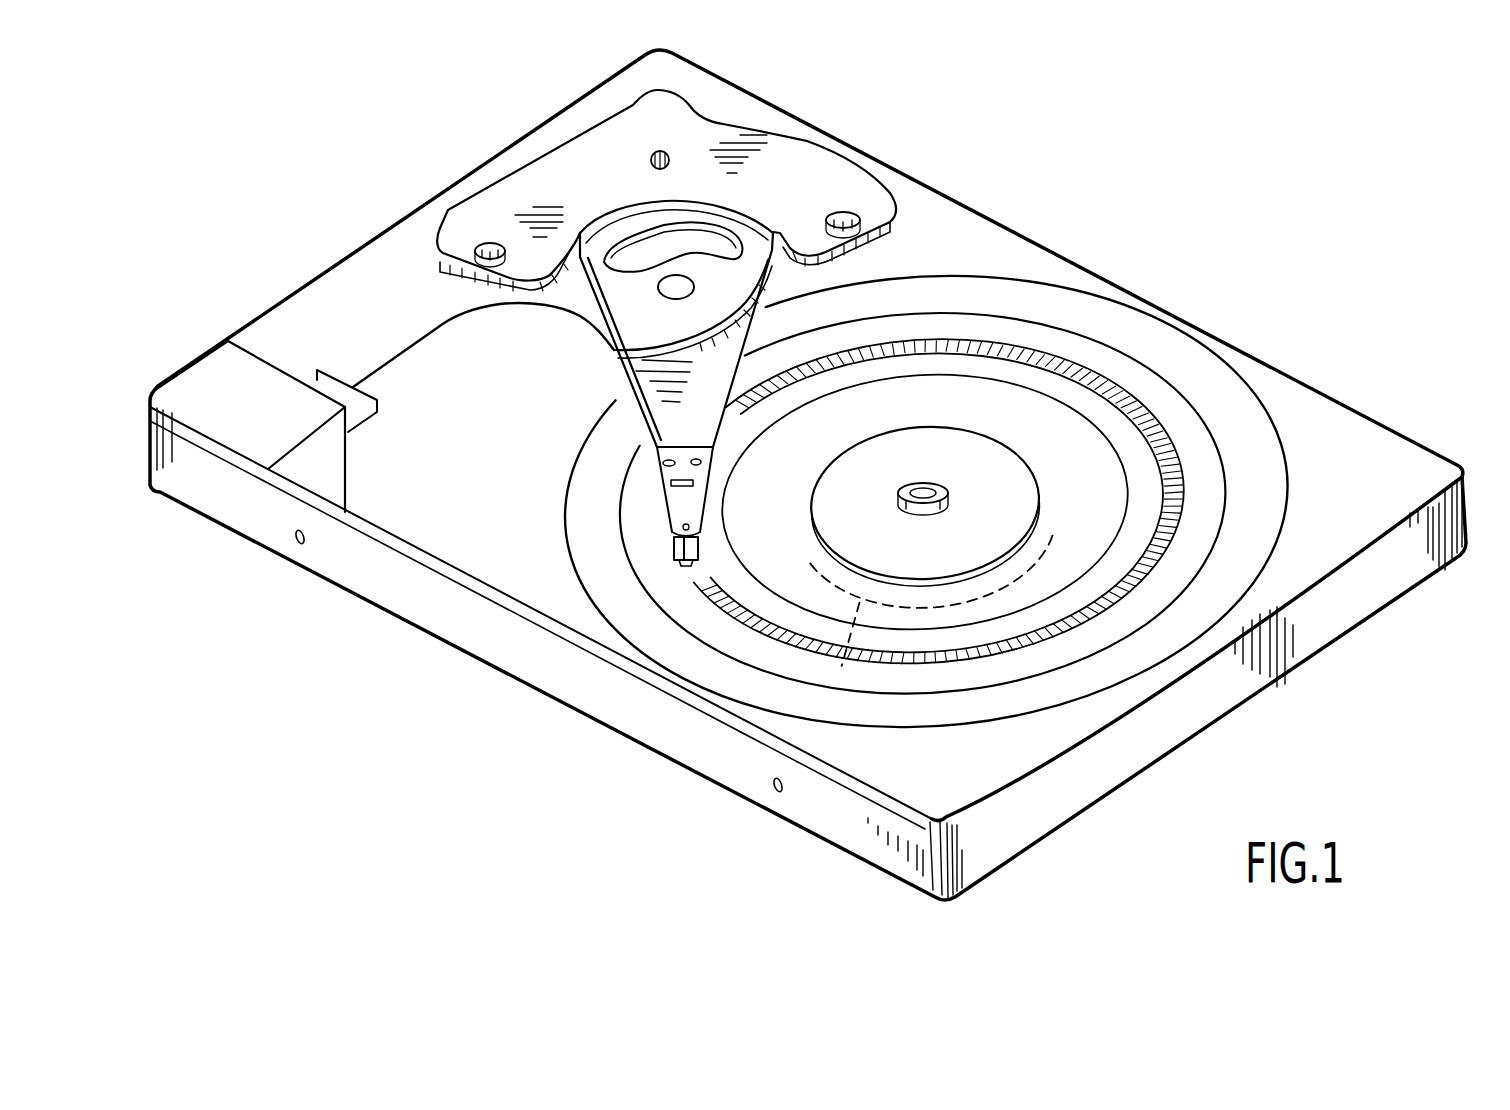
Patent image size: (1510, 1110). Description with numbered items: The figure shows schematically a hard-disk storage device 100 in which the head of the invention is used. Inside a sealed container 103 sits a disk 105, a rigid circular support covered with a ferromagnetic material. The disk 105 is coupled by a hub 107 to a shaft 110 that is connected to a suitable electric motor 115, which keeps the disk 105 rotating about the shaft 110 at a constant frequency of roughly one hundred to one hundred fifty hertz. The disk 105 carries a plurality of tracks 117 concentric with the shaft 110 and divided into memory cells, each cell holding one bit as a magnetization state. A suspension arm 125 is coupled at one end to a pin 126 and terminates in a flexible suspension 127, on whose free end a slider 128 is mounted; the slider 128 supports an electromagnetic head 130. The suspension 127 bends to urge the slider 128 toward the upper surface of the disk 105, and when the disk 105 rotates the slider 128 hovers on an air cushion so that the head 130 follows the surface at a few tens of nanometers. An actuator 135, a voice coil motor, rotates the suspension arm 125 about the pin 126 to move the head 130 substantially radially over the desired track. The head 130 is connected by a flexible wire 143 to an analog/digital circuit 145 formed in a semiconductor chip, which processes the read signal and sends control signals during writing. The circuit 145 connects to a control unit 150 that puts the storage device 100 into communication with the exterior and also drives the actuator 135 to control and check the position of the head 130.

The hard-disk storage device 100 is at (1199, 217).
The sealed container 103 is at (1377, 588).
The disk 105 is at (967, 697).
The hub 107 is at (947, 497).
The shaft 110 is at (928, 487).
The electric motor 115 is at (828, 661).
The tracks 117 is at (1246, 494).
The suspension arm 125 is at (610, 381).
The pin 126 is at (650, 158).
The flexible suspension 127 is at (695, 500).
The slider 128 is at (688, 566).
The electromagnetic head 130 is at (677, 560).
The actuator 135 is at (457, 204).
The flexible wire 143 is at (438, 329).
The analog/digital circuit 145 is at (324, 378).
The control unit 150 is at (333, 453).